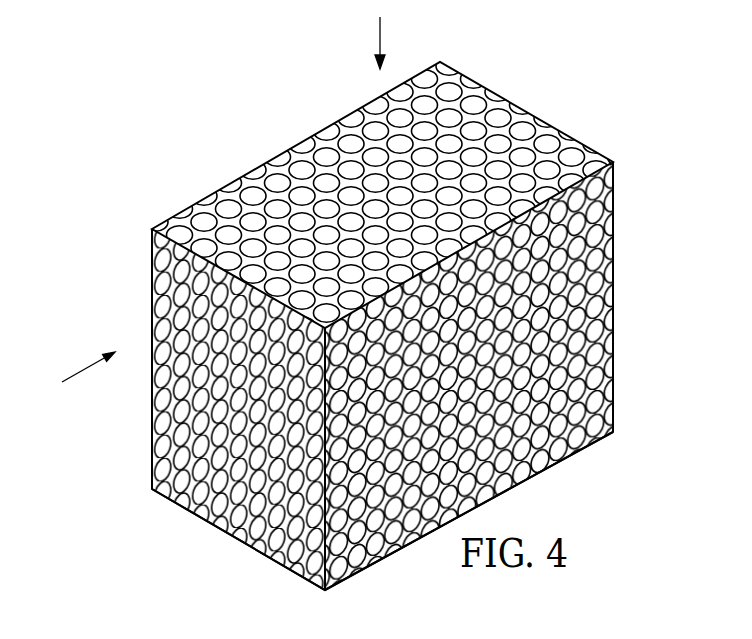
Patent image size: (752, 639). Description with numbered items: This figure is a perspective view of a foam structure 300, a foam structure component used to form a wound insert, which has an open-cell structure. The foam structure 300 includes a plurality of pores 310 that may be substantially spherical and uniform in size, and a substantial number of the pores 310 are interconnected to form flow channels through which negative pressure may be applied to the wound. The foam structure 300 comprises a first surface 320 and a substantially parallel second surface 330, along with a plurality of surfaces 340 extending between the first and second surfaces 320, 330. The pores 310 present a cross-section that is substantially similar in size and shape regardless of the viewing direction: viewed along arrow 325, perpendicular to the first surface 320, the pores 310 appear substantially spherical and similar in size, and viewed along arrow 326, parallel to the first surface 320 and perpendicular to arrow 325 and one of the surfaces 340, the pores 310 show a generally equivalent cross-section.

The foam structure 300 is at (560, 98).
The pores 310 is at (155, 273).
The first surface 320 is at (300, 143).
The arrow 325 is at (378, 40).
The arrow 326 is at (80, 367).
The second surface 330 is at (600, 437).
The surfaces 340 is at (617, 243).